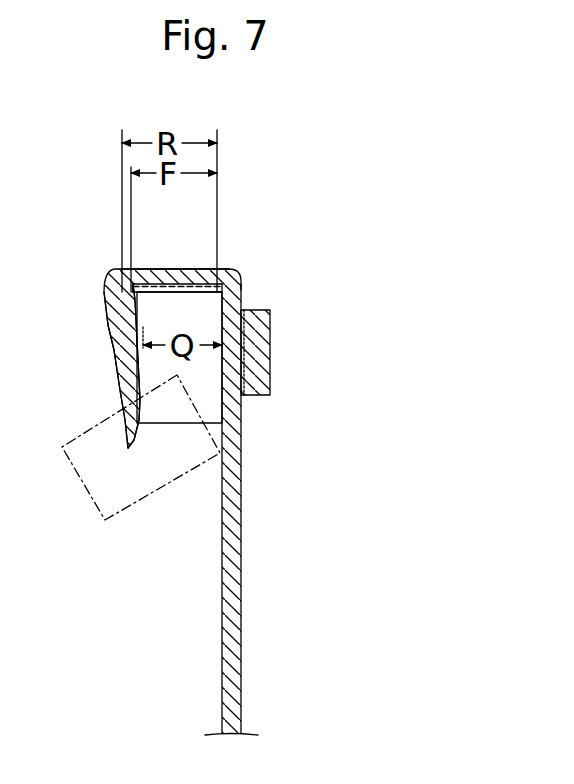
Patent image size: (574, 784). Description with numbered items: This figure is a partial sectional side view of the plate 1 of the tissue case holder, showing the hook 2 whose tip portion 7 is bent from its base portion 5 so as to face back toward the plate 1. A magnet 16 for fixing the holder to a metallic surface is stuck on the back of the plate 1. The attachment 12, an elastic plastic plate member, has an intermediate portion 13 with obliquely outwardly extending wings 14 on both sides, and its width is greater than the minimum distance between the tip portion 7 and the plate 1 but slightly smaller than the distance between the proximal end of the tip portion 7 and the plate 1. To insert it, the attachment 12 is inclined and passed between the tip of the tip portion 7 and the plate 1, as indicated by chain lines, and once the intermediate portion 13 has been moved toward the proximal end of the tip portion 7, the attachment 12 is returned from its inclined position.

The plate 1 is at (233, 648).
The hook 2 is at (108, 322).
The base portion 5 is at (152, 277).
The tip portion 7 is at (118, 350).
The attachment 12 is at (173, 425).
The intermediate portion 13 is at (190, 287).
The wing 14 is at (197, 380).
The magnet 16 is at (263, 352).